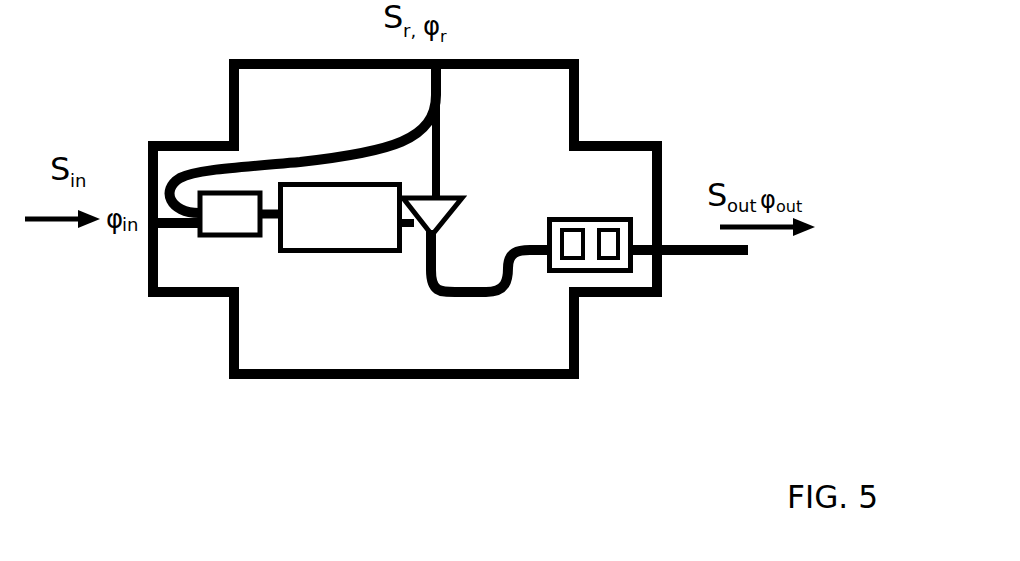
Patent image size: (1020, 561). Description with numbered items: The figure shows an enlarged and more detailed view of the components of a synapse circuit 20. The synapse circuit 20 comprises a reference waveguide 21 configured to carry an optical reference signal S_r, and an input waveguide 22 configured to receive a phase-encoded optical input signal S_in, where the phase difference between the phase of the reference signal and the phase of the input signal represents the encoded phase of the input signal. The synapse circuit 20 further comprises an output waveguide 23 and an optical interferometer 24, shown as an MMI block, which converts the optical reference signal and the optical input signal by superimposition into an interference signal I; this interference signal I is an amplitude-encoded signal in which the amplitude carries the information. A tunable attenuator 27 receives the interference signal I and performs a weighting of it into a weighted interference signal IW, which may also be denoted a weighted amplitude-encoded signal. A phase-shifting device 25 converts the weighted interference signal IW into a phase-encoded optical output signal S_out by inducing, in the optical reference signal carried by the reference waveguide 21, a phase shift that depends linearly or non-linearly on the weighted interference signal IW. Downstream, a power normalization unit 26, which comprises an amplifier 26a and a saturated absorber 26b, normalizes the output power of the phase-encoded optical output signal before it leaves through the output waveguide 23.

The synapse circuit 20 is at (727, 446).
The reference waveguide 21 is at (440, 103).
The input waveguide 22 is at (176, 228).
The output waveguide 23 is at (735, 257).
The optical interferometer 24 is at (213, 238).
The phase-shifting device 25 is at (462, 196).
The power normalization unit 26 is at (578, 284).
The amplifier 26a is at (557, 274).
The saturated absorber 26b is at (608, 262).
The tunable attenuator 27 is at (333, 255).
The interference signal I is at (276, 226).
The weighted interference signal IW is at (410, 230).